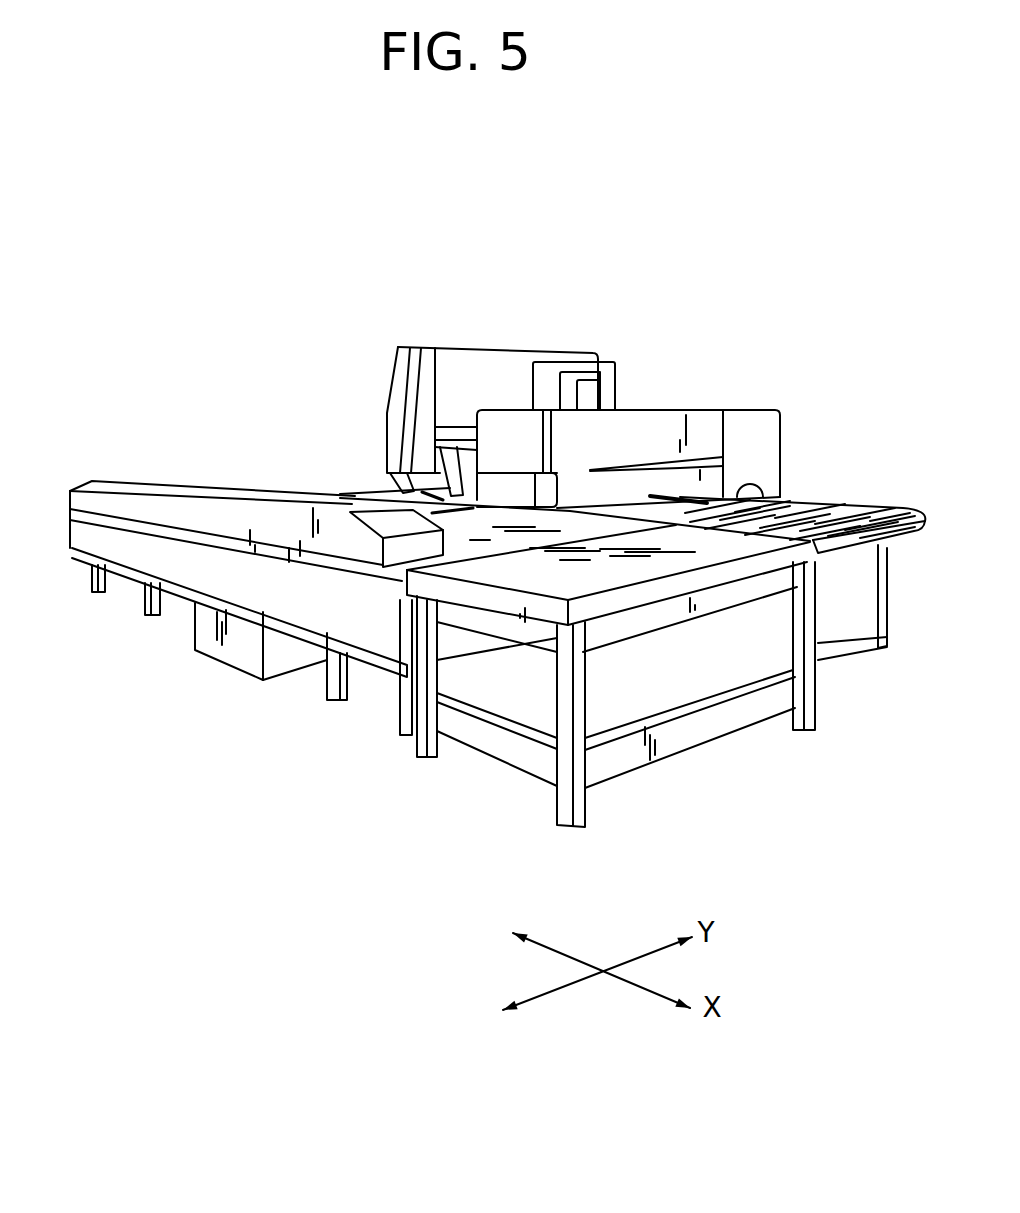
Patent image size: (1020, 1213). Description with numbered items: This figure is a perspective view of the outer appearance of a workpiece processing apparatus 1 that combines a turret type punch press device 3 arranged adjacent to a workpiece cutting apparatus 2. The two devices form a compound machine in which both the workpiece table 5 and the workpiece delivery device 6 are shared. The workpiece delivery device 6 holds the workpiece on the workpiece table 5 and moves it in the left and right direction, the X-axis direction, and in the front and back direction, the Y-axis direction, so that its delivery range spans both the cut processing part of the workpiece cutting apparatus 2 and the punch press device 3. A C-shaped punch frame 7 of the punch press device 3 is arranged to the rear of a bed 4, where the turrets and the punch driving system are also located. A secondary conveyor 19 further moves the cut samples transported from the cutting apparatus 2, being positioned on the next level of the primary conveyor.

The workpiece processing apparatus 1 is at (245, 348).
The workpiece cutting apparatus 2 is at (690, 405).
The turret type punch press device 3 is at (504, 337).
The bed 4 is at (242, 658).
The workpiece table 5 is at (478, 535).
The workpiece delivery device 6 is at (201, 488).
The C-shaped punch frame 7 is at (459, 362).
The secondary conveyor 19 is at (847, 515).